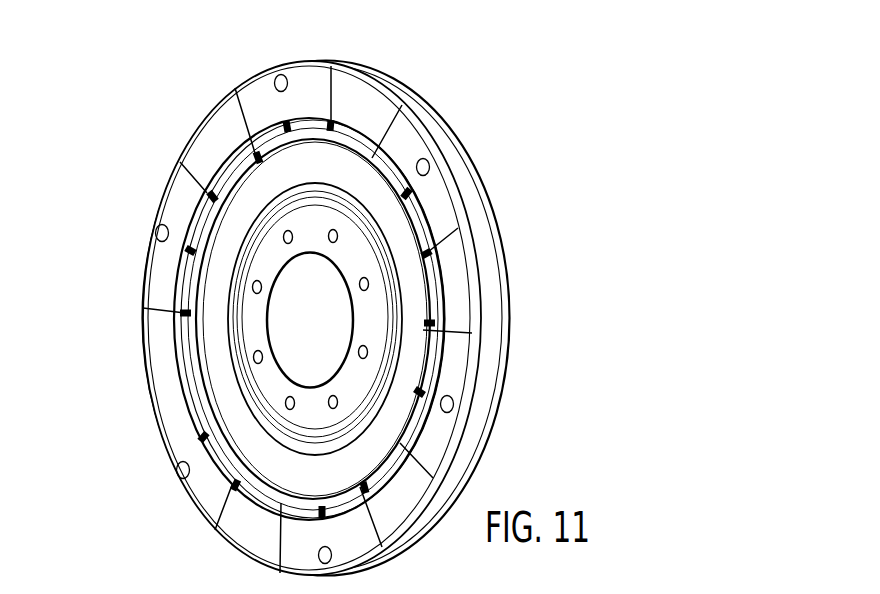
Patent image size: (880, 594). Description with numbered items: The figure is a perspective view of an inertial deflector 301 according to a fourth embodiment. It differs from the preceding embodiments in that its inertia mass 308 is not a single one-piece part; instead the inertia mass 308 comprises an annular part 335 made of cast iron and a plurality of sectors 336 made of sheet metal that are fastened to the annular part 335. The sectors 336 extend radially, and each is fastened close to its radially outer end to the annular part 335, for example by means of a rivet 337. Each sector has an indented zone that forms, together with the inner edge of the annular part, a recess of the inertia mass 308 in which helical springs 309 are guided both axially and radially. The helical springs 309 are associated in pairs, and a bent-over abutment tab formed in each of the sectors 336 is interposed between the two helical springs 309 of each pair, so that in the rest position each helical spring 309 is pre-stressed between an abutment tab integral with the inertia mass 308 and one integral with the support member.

The inertial deflector 301 is at (585, 268).
The inertia mass 308 is at (474, 135).
The helical springs 309 is at (207, 193).
The annular part 335 is at (392, 80).
The sectors 336 is at (253, 102).
The rivet 337 is at (152, 234).